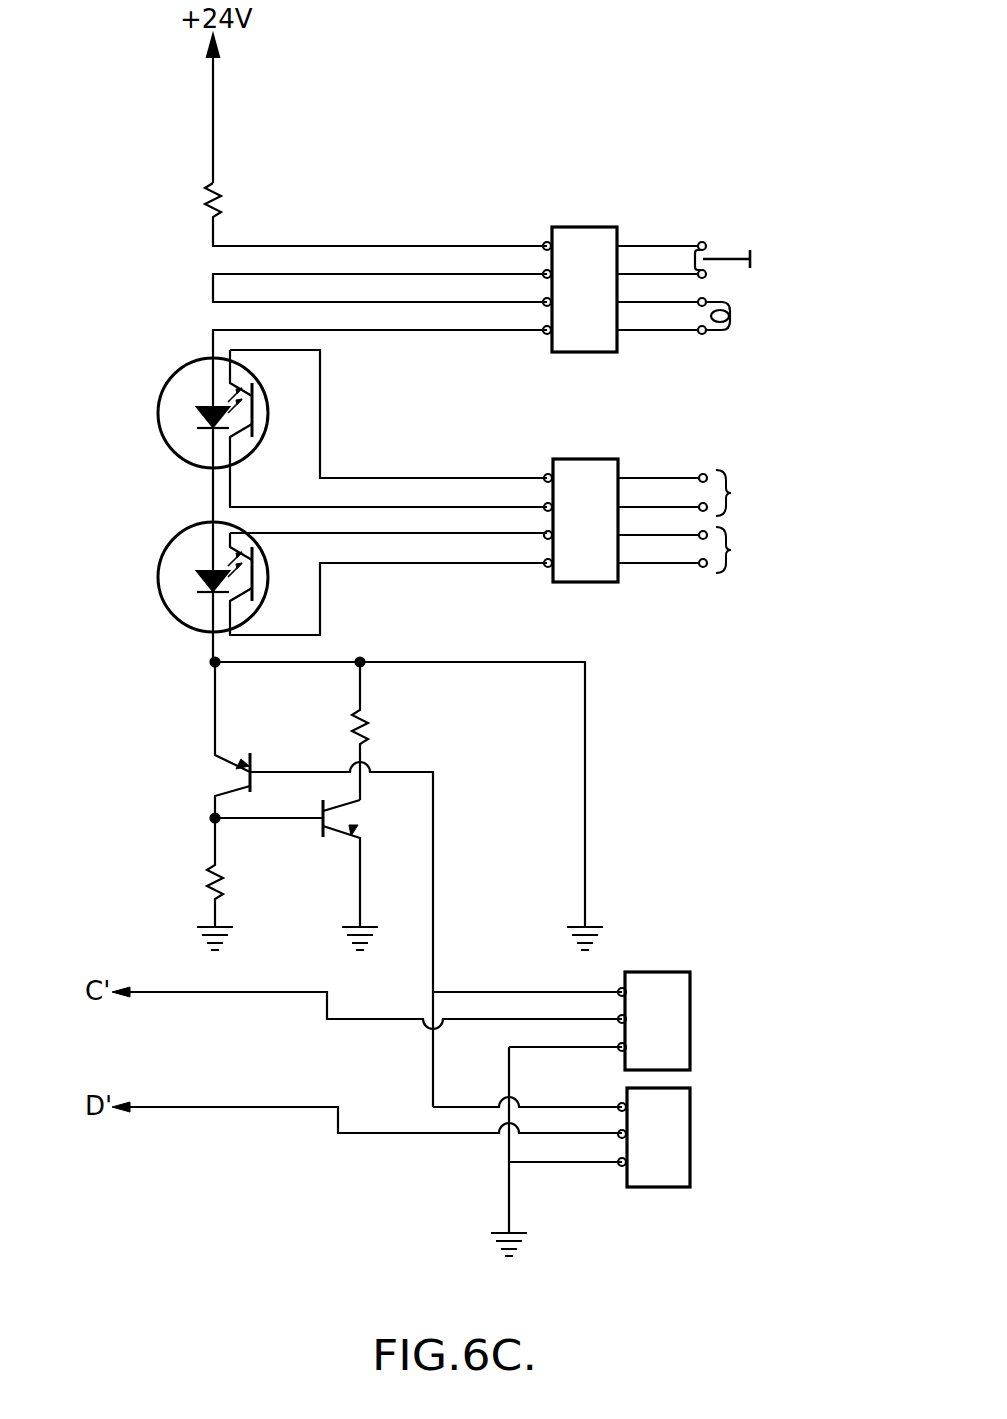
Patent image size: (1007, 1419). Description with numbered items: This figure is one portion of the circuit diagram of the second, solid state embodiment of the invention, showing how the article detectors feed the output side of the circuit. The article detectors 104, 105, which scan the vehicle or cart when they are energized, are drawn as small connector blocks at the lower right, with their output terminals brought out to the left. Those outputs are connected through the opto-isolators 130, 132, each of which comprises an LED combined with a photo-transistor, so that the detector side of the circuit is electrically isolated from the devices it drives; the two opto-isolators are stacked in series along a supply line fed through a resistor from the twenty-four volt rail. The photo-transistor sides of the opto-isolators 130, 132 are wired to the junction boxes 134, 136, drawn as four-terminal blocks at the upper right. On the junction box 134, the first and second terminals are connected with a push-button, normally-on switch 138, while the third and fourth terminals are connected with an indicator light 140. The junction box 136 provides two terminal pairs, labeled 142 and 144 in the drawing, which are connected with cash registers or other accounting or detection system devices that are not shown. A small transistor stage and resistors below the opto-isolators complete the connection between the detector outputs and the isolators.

The article detector 104 is at (690, 983).
The article detector 105 is at (690, 1098).
The opto-isolator 130 is at (161, 593).
The opto-isolator 132 is at (167, 375).
The junction box 134 is at (585, 227).
The junction box 136 is at (598, 459).
The push-button, normally-on switch 138 is at (704, 243).
The indicator light 140 is at (728, 332).
The terminals 142 is at (750, 493).
The terminals 144 is at (750, 550).